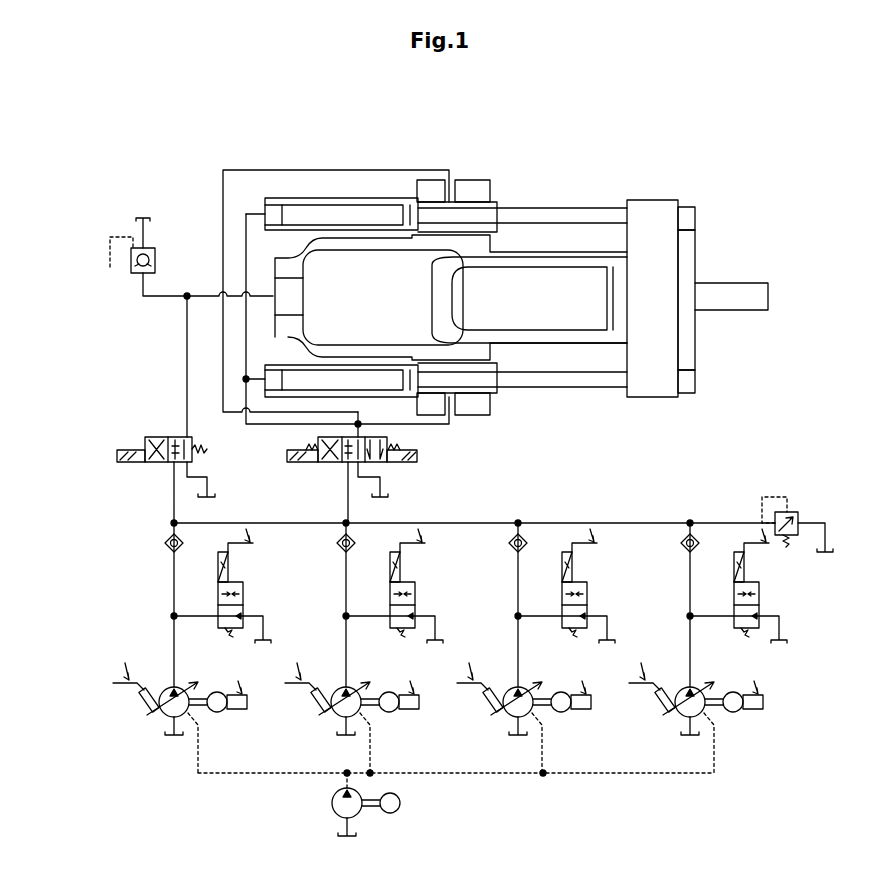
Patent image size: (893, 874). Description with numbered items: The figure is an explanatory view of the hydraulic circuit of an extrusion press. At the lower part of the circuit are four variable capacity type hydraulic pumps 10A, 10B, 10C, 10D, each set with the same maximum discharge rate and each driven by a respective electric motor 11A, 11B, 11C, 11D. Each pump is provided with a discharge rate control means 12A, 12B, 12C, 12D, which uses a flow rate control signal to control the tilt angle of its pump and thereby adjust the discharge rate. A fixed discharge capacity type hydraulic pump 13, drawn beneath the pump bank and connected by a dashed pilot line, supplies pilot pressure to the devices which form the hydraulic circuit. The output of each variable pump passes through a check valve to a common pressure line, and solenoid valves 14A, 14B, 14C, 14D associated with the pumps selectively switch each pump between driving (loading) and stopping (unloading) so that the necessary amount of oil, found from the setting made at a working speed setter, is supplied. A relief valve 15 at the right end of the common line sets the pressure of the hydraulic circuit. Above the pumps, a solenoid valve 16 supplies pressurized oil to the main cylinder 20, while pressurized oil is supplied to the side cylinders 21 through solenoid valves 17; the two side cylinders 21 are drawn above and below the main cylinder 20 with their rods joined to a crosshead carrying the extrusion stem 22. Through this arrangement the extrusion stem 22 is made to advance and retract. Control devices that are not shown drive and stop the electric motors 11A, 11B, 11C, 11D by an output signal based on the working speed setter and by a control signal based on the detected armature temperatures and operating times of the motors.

The variable capacity type hydraulic pump 10A is at (183, 694).
The variable capacity type hydraulic pump 10B is at (355, 694).
The variable capacity type hydraulic pump 10C is at (527, 694).
The variable capacity type hydraulic pump 10D is at (700, 694).
The electric motor 11A is at (225, 719).
The electric motor 11B is at (397, 719).
The electric motor 11C is at (569, 719).
The electric motor 11D is at (742, 719).
The discharge rate control means 12A is at (132, 707).
The discharge rate control means 12B is at (304, 707).
The discharge rate control means 12C is at (476, 707).
The discharge rate control means 12D is at (648, 707).
The fixed discharge capacity type hydraulic pump 13 is at (332, 805).
The solenoid valve 14A is at (234, 586).
The solenoid valve 14B is at (406, 586).
The solenoid valve 14C is at (578, 586).
The solenoid valve 14D is at (751, 586).
The relief valve 15 is at (792, 508).
The solenoid valve 16 is at (130, 462).
The solenoid valve 17 is at (386, 462).
The main cylinder 20 is at (290, 270).
The side cylinder 21 is at (345, 198).
The extrusion stem 22 is at (735, 283).